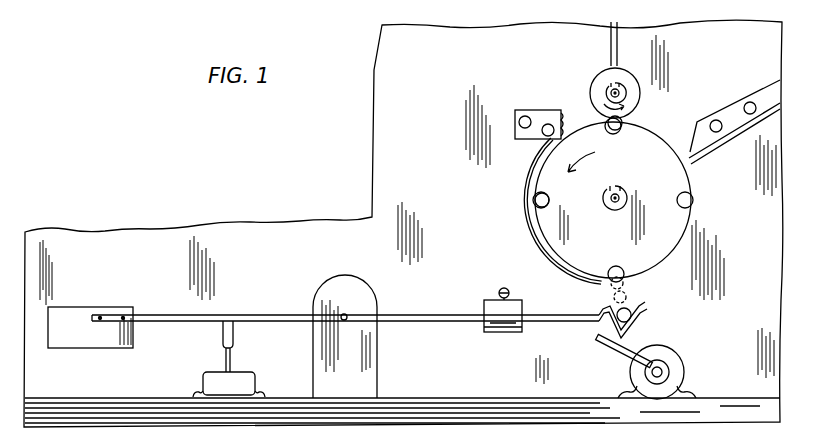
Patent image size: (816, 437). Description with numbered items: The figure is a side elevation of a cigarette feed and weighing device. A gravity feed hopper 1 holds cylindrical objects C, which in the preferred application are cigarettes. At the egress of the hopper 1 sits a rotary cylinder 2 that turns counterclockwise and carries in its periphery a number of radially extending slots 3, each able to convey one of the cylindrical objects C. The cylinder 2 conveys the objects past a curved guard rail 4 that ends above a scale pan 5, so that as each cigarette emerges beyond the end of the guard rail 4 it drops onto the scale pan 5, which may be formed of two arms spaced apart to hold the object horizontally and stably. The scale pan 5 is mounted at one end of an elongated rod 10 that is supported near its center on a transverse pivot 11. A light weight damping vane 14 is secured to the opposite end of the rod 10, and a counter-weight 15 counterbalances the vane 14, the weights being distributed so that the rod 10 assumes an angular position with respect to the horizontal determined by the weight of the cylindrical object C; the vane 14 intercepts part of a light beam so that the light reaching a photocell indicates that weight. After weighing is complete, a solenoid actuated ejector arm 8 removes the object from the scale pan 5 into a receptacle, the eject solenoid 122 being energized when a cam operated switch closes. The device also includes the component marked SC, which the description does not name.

The gravity feed hopper 1 is at (720, 73).
The rotary cylinder 2 is at (674, 182).
The radially extending slots 3 is at (695, 200).
The curved guard rail 4 is at (531, 238).
The scale pan 5 is at (641, 319).
The ejector arm 8 is at (620, 353).
The elongated rod 10 is at (253, 315).
The transverse pivot 11 is at (348, 319).
The damping vane 14 is at (120, 345).
The counter-weight 15 is at (496, 305).
The eject solenoid 122 is at (668, 360).
The switch SC is at (237, 378).
The cylindrical objects C is at (626, 122).